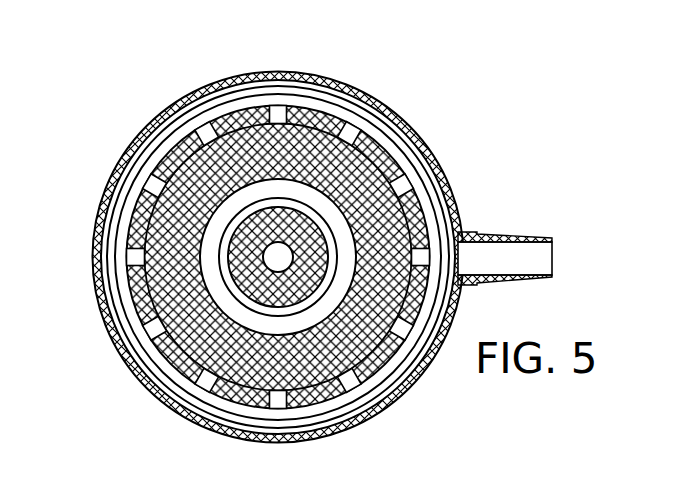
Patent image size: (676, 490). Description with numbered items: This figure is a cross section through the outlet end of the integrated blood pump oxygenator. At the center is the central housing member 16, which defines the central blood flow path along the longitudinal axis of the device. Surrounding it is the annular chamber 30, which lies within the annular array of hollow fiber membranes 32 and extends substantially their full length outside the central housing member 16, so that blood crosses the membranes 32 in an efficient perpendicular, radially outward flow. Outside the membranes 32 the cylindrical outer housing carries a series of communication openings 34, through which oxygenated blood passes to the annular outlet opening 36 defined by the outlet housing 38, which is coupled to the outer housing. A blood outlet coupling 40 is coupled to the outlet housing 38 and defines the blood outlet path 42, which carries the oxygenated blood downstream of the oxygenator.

The central housing member 16 is at (227, 262).
The annular chamber 30 is at (322, 155).
The hollow fiber membranes 32 is at (266, 118).
The communication openings 34 is at (205, 380).
The annular outlet opening 36 is at (397, 143).
The outlet housing 38 is at (383, 110).
The blood outlet coupling 40 is at (508, 235).
The blood outlet path 42 is at (528, 260).